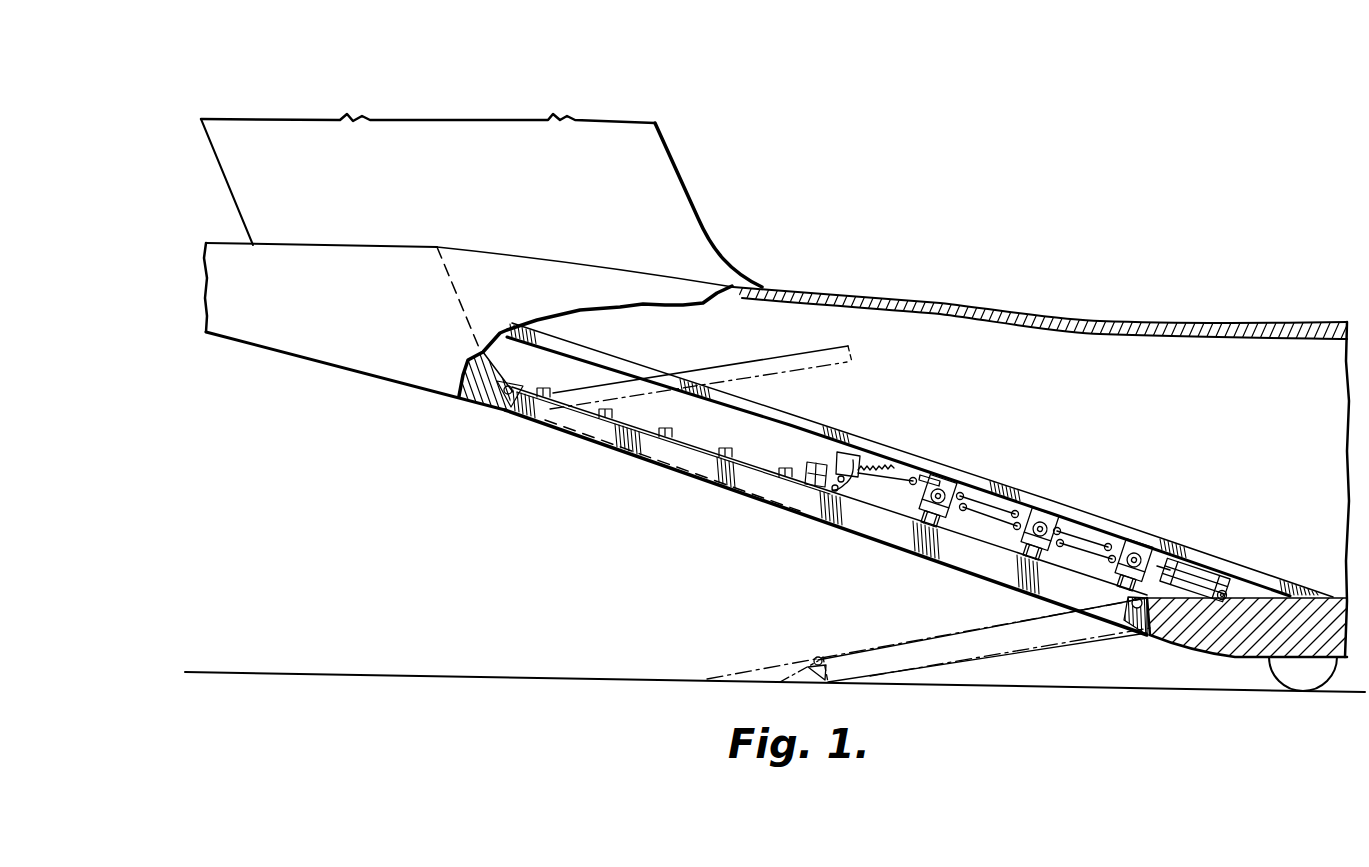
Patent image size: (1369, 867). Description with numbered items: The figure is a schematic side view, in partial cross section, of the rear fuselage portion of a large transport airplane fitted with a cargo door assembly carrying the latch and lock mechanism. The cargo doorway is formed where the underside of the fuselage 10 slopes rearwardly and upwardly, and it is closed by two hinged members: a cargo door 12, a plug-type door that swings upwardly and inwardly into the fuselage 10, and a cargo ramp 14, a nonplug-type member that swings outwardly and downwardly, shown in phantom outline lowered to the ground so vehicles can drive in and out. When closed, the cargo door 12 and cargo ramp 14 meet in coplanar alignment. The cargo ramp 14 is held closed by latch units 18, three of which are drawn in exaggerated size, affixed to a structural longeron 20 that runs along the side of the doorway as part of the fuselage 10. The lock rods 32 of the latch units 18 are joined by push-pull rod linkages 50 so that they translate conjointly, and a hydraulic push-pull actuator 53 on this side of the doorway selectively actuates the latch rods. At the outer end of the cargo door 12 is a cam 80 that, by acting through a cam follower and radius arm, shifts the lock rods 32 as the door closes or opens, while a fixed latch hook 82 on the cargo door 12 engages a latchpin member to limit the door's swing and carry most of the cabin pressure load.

The fuselage 10 is at (984, 295).
The cargo door 12 is at (841, 360).
The cargo ramp 14 is at (973, 573).
The latch units 18 is at (946, 479).
The structural longerons 20 is at (1207, 560).
The lock rods 32 is at (927, 475).
The push-pull rod linkages 50 is at (986, 501).
The hydraulic push-pull actuators 53 is at (1224, 586).
The cams 80 is at (843, 461).
The fixed latch hooks 82 is at (716, 450).